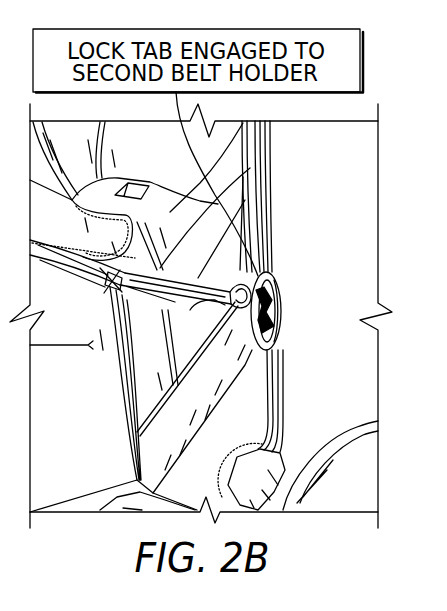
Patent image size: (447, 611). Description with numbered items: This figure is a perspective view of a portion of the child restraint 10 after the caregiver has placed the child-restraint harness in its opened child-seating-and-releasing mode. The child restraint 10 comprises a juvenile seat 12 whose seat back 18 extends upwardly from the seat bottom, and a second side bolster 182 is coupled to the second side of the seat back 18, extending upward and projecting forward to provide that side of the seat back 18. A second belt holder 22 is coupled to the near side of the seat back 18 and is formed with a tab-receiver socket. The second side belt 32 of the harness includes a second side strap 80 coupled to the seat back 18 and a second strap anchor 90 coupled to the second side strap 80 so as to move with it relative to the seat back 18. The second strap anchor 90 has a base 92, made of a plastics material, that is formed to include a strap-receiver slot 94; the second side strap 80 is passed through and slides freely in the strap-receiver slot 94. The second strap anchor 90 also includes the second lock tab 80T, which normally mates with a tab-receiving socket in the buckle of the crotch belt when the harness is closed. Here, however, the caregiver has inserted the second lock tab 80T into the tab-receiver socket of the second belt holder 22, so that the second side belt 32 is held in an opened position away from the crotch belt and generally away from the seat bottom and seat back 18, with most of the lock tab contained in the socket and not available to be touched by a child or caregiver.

The child restraint 10 is at (319, 178).
The juvenile seat 12 is at (282, 208).
The seat back 18 is at (284, 233).
The second belt holder 22 is at (300, 306).
The second lock tab 80T is at (265, 321).
The second side bolster 182 is at (285, 383).
The second side belt 32 is at (222, 446).
The second strap anchor 90 is at (222, 262).
The strap-receiver slot 94 is at (163, 294).
The base 92 is at (215, 299).
The second side strap 80 is at (173, 423).